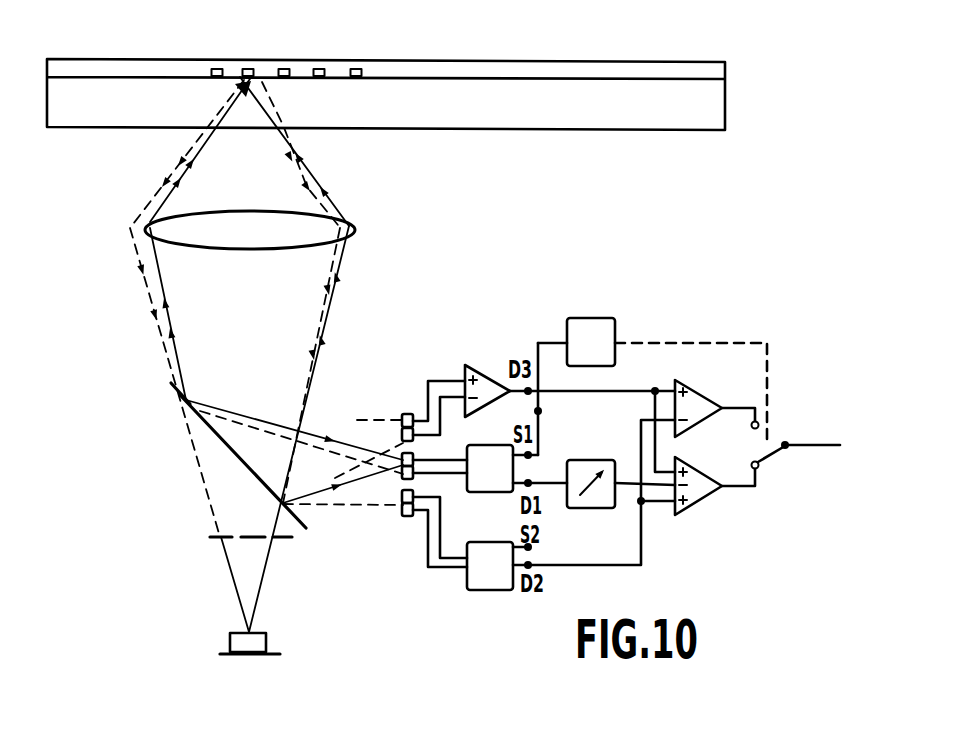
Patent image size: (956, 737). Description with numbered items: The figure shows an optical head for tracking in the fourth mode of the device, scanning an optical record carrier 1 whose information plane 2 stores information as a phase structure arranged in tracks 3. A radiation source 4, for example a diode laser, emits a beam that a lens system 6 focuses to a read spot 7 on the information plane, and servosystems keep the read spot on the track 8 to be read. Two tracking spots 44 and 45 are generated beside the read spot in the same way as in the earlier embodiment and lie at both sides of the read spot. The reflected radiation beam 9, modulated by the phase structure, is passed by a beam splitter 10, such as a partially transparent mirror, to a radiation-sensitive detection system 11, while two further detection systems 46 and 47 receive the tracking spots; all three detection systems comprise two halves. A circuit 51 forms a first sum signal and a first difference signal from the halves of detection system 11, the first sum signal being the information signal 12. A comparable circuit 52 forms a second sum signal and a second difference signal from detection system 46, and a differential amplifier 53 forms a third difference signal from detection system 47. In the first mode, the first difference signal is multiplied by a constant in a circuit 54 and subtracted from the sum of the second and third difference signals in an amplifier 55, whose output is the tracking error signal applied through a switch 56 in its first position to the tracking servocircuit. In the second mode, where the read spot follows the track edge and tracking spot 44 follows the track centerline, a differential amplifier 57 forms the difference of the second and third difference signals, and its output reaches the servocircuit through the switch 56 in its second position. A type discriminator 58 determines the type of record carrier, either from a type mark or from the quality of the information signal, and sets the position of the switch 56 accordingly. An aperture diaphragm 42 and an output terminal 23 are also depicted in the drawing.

The optical record carrier 1 is at (750, 44).
The information plane 2 is at (613, 78).
The tracks 3 is at (320, 63).
The radiation source 4 is at (268, 645).
The lens system 6 is at (170, 228).
The read spot 7 is at (240, 88).
The track to be read 8 is at (247, 69).
The reflected radiation beam 9 is at (307, 168).
The beam splitter 10 is at (182, 396).
The radiation-sensitive detection system 11 is at (393, 478).
The information signal 12 is at (538, 411).
The output terminal 23 is at (828, 448).
The aperture diaphragm 42 is at (215, 545).
The tracking spot 44 is at (243, 83).
The tracking spot 45 is at (260, 82).
The detection system 46 is at (407, 519).
The detection system 47 is at (407, 412).
The circuit 51 is at (490, 493).
The circuit 52 is at (488, 591).
The differential amplifier 53 is at (472, 364).
The circuit 54 is at (591, 509).
The amplifier 55 is at (705, 503).
The switch 56 is at (773, 457).
The differential amplifier 57 is at (700, 391).
The type discriminator 58 is at (583, 318).